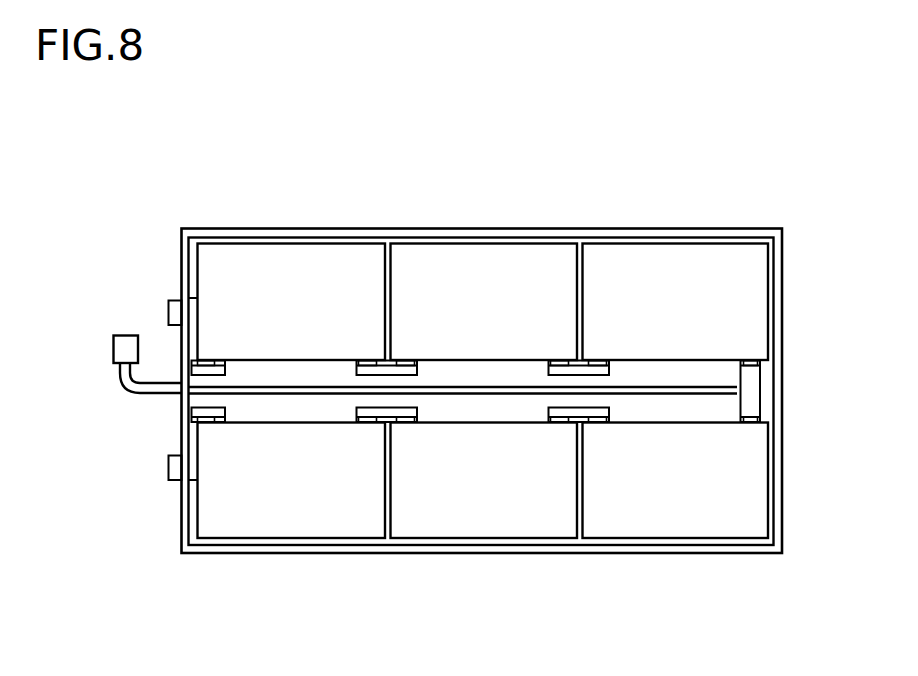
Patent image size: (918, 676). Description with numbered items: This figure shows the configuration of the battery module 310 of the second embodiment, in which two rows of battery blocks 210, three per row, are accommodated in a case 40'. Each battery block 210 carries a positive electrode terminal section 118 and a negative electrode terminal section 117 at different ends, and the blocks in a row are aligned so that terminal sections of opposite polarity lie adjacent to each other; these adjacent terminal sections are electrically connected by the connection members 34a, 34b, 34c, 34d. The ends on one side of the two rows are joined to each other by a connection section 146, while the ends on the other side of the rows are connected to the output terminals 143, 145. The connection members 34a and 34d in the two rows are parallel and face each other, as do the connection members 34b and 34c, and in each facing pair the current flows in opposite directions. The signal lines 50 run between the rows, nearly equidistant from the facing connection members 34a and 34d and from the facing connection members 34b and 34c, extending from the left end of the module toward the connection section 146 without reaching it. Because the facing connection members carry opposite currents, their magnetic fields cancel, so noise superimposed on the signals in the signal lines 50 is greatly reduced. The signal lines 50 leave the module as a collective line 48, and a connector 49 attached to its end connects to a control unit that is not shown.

The battery module 310 is at (667, 208).
The battery block 210 is at (632, 256).
The negative electrode terminal section 117 is at (367, 362).
The positive electrode terminal section 118 is at (214, 362).
The connection member 34a is at (357, 411).
The connection member 34b is at (609, 411).
The connection member 34c is at (609, 368).
The connection member 34d is at (417, 368).
The signal lines 50 is at (473, 396).
The case 40' is at (482, 440).
The output terminal 143 is at (170, 308).
The output terminal 145 is at (170, 482).
The connection section 146 is at (750, 390).
The connector 49 is at (125, 346).
The collective line 48 is at (143, 394).